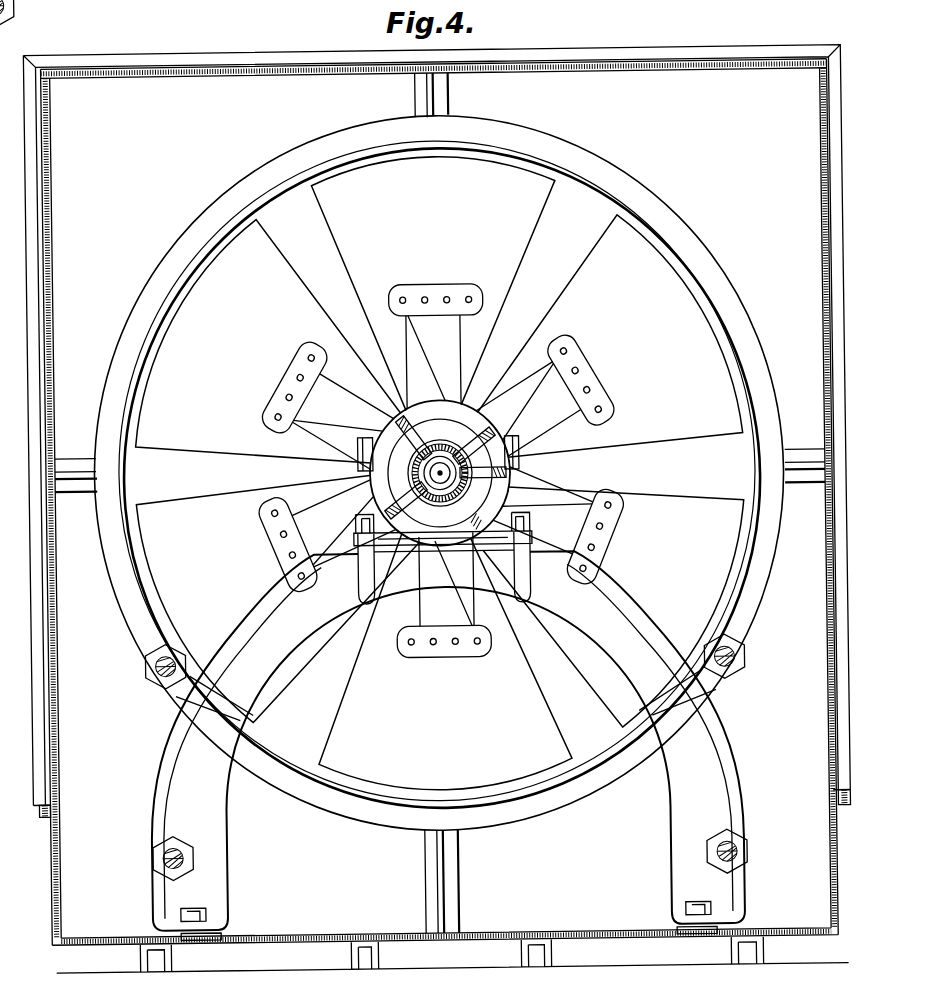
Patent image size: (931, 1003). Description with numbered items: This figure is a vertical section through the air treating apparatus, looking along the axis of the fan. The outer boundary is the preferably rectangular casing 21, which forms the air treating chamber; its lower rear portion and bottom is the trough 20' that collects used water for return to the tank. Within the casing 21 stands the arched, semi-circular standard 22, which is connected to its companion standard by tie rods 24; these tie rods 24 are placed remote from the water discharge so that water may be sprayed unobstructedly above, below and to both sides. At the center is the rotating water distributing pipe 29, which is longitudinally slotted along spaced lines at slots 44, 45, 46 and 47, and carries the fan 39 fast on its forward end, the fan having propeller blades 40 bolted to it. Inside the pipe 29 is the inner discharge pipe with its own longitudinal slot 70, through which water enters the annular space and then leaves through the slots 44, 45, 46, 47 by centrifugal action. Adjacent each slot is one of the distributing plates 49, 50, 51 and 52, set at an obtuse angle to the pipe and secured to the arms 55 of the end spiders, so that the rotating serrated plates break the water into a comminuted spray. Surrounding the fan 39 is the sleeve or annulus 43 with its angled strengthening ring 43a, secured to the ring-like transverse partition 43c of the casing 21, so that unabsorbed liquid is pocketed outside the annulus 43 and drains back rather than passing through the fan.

The trough 20' is at (445, 516).
The casing 21 is at (706, 70).
The standard 22 is at (722, 734).
The tie rods 24 is at (170, 657).
The water distributing pipe 29 is at (395, 440).
The fan 39 is at (452, 350).
The propeller blades 40 is at (335, 217).
The sleeve or annulus 43 is at (303, 166).
The strengthening ring 43a is at (236, 190).
The transverse partition 43c is at (190, 92).
The longitudinal slot 44 is at (437, 440).
The longitudinal slot 45 is at (463, 476).
The longitudinal slot 46 is at (440, 492).
The longitudinal slot 47 is at (408, 460).
The distributing plate 49 is at (430, 445).
The distributing plate 50 is at (503, 435).
The distributing plate 51 is at (440, 530).
The distributing plate 52 is at (360, 478).
The arms 55 is at (407, 422).
The longitudinal slot 70 is at (450, 440).